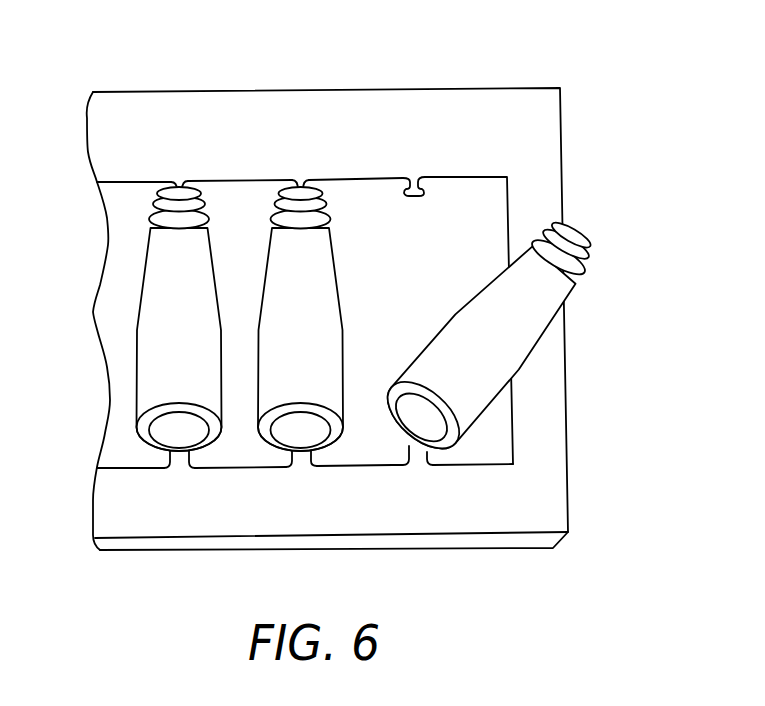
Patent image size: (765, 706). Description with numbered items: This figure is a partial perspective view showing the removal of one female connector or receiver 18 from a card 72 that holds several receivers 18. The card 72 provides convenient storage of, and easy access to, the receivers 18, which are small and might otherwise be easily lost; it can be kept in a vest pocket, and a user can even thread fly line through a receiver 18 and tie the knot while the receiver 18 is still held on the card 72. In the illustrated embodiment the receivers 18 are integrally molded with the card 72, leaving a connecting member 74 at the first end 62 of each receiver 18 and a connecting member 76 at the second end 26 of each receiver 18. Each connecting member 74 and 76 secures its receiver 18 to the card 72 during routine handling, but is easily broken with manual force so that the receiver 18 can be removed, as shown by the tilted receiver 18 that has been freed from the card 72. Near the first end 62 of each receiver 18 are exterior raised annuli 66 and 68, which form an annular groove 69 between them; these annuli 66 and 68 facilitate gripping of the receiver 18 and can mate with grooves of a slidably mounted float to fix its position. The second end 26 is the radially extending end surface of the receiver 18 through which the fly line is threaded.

The female connector or receiver 18 is at (395, 328).
The second end 26 is at (457, 442).
The first end 62 is at (578, 237).
The exterior raised annulus 66 is at (587, 267).
The exterior raised annulus 68 is at (577, 285).
The annular groove 69 is at (557, 242).
The card 72 is at (482, 100).
The connecting member 74 is at (413, 187).
The connecting member 76 is at (420, 460).